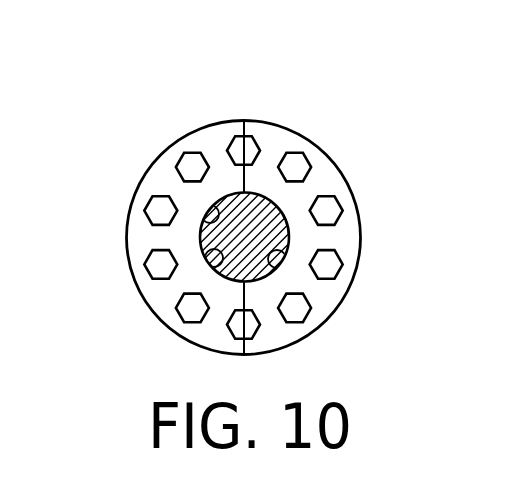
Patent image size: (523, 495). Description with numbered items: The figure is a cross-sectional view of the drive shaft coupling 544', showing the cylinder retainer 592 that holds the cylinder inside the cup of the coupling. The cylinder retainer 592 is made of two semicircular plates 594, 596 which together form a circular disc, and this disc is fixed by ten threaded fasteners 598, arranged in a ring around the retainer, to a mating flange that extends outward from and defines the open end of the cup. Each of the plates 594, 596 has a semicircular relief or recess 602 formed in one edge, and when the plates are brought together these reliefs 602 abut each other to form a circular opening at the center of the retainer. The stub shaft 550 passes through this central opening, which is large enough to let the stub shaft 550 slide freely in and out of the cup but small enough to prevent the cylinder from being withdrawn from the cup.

The coupling 544' is at (321, 191).
The cylinder retainer 592 is at (136, 129).
The plate 594 is at (143, 237).
The plate 596 is at (343, 238).
The threaded fasteners 598 is at (296, 168).
The stub shaft 550 is at (274, 224).
The reliefs or recesses 602 is at (206, 258).